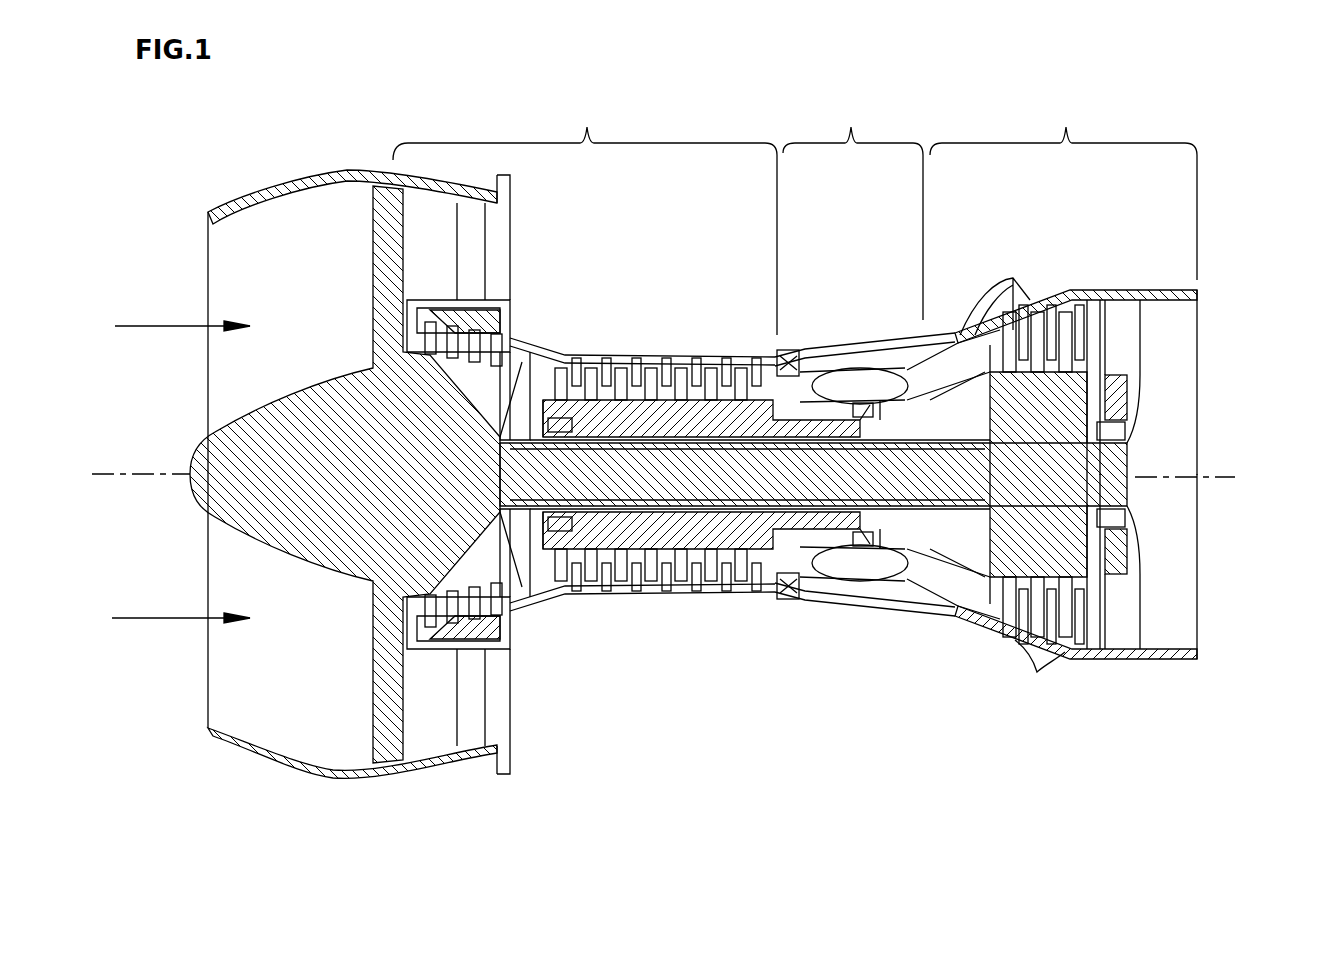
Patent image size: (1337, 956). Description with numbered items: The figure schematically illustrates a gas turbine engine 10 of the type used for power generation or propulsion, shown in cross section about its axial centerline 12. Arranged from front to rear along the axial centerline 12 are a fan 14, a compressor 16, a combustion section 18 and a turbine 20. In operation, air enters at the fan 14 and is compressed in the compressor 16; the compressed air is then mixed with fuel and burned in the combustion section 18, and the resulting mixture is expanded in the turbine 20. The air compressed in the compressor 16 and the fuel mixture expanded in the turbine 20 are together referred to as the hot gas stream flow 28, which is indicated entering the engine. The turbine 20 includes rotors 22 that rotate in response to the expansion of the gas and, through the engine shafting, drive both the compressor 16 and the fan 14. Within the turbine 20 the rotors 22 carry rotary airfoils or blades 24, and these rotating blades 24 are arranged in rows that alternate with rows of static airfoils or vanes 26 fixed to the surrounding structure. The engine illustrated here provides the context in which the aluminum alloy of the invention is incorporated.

The gas turbine engine 10 is at (225, 183).
The axial centerline 12 is at (147, 468).
The fan 14 is at (378, 225).
The compressor 16 is at (691, 433).
The combustion section 18 is at (882, 354).
The turbine 20 is at (1063, 376).
The rotors 22 is at (935, 527).
The blades 24 is at (1037, 672).
The vanes 26 is at (1001, 292).
The hot gas stream flow 28 is at (181, 472).